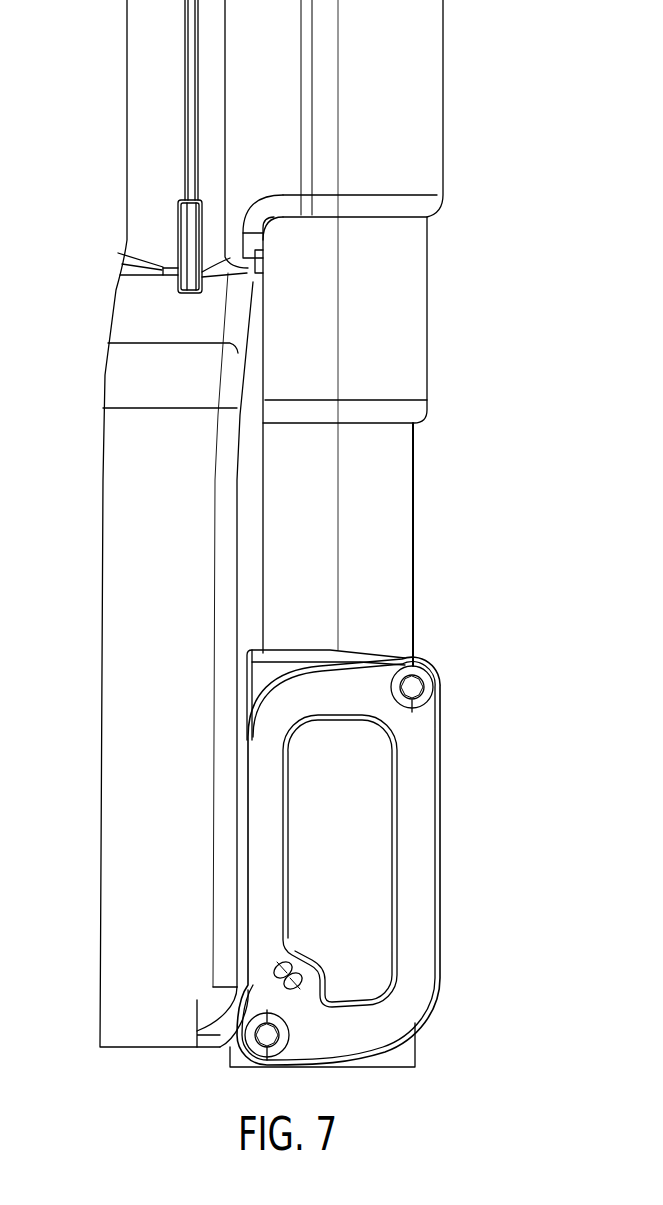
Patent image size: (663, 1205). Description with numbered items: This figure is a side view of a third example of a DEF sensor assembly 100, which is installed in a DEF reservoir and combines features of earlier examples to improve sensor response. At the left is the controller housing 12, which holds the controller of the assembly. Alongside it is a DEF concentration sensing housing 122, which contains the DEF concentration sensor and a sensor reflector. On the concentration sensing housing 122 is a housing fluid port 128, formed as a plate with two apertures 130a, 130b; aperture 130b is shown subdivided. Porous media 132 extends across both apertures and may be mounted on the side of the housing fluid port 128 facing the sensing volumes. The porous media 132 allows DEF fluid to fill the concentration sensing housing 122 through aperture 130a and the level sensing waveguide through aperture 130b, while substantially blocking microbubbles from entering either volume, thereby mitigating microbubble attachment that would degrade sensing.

The controller housing 12 is at (115, 732).
The DEF sensor assembly 100 is at (537, 571).
The DEF concentration sensing housing 122 is at (290, 660).
The housing fluid port 128 is at (425, 747).
The aperture 130a is at (400, 908).
The aperture 130b is at (293, 977).
The porous media 132 is at (365, 848).